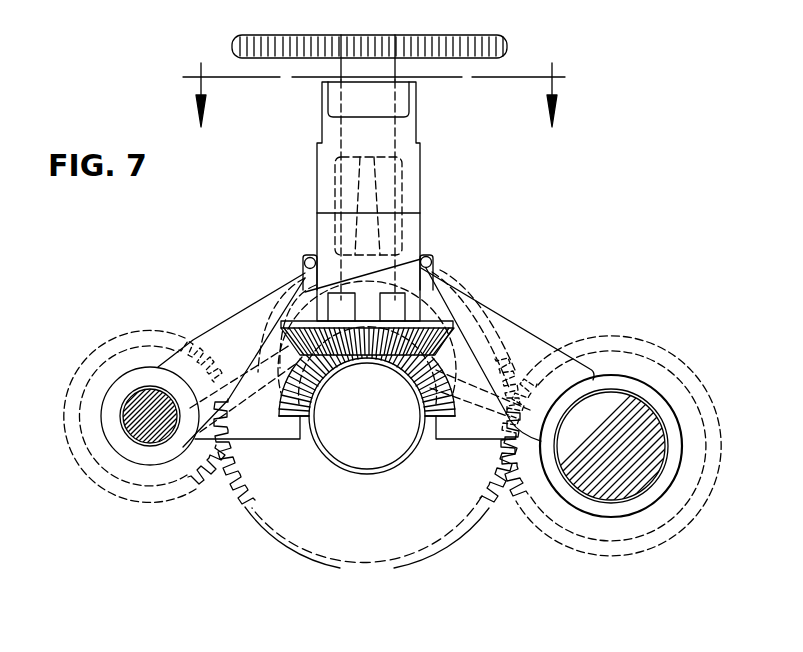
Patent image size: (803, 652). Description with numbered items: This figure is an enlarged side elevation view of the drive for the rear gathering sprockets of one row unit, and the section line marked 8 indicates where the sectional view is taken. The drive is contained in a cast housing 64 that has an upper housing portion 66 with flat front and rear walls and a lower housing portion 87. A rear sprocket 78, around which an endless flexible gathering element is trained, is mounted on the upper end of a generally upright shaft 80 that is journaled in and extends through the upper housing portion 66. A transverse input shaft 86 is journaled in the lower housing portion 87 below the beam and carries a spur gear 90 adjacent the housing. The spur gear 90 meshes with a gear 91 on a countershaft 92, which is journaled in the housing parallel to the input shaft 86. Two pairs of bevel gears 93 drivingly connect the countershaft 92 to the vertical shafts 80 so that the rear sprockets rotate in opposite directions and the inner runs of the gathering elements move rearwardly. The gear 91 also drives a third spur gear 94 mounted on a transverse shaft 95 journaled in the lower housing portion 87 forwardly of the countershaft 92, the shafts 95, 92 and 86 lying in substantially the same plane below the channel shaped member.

The section line 8- 8 is at (376, 88).
The rear sprocket 78 is at (413, 38).
The upright shaft 80 is at (394, 69).
The upper housing portion 66 is at (428, 238).
The cast housing 64 is at (517, 311).
The lower housing portion 87 is at (535, 338).
The spur gear 90 is at (658, 370).
The transverse input shaft 86 is at (645, 475).
The bevel gears 93 is at (440, 340).
The countershaft 92 is at (362, 448).
The transverse shaft 95 is at (122, 412).
The third spur gear 94 is at (160, 483).
The gear 91 is at (450, 518).